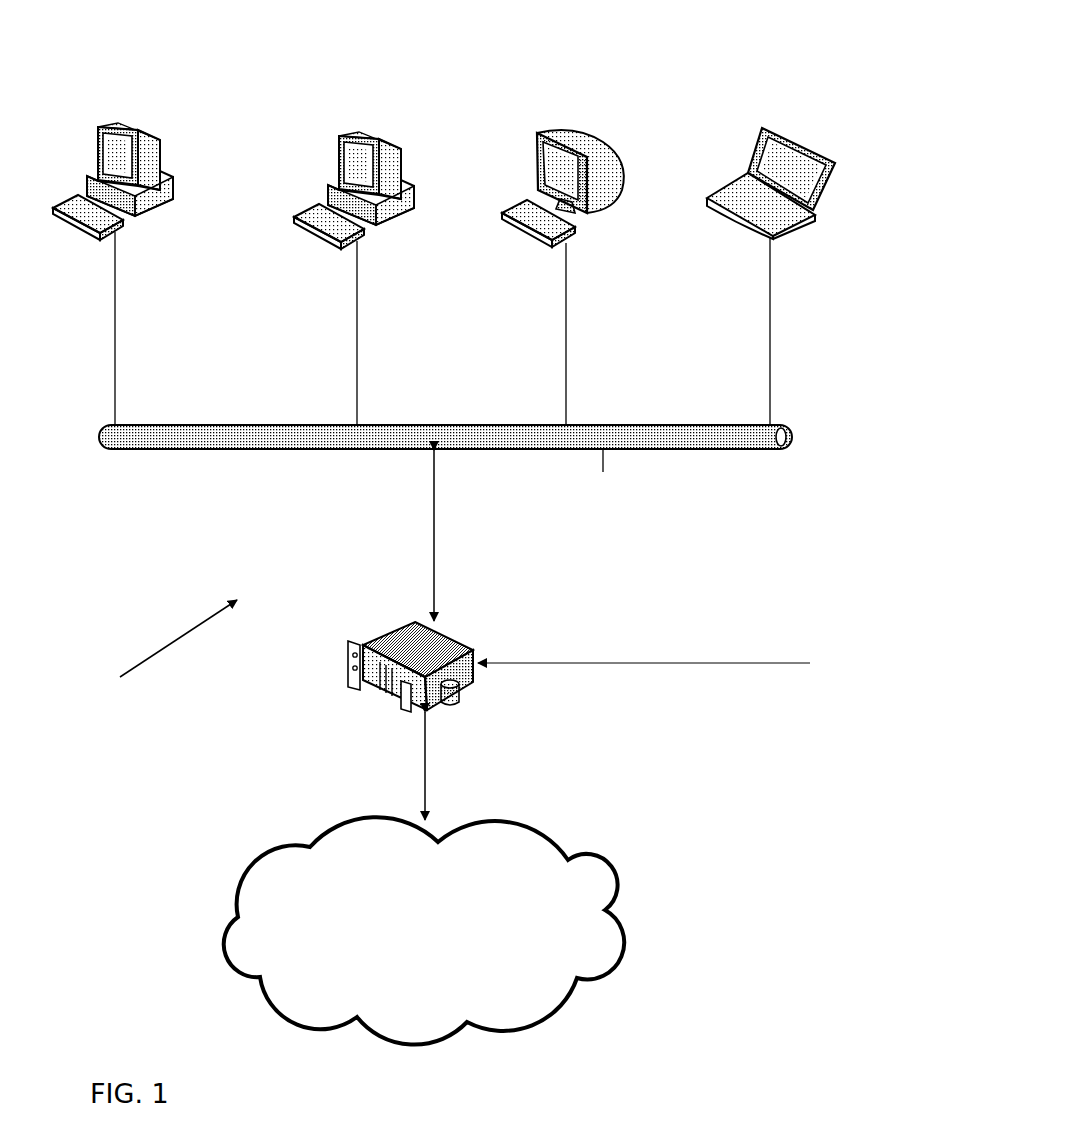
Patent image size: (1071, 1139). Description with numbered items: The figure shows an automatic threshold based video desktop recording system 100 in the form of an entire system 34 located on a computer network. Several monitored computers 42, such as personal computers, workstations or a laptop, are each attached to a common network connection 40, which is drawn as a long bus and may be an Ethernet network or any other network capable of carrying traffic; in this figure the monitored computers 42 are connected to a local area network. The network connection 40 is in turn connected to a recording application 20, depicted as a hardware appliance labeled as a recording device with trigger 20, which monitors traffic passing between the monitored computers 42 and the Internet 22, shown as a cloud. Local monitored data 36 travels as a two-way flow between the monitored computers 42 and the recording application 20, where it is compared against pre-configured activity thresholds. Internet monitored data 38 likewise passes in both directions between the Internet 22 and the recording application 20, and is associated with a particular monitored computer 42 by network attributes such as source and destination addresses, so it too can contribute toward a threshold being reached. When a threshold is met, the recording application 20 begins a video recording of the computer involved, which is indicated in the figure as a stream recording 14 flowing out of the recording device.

The video recording system 100 is at (810, 18).
The monitored computers 42 is at (133, 125).
The network connection 40 is at (253, 450).
The local monitored data 36 is at (434, 493).
The entire system 34 is at (162, 642).
The recording application 20 is at (475, 646).
The stream recording 14 is at (535, 663).
The Internet monitored data 38 is at (427, 788).
The Internet 22 is at (617, 918).